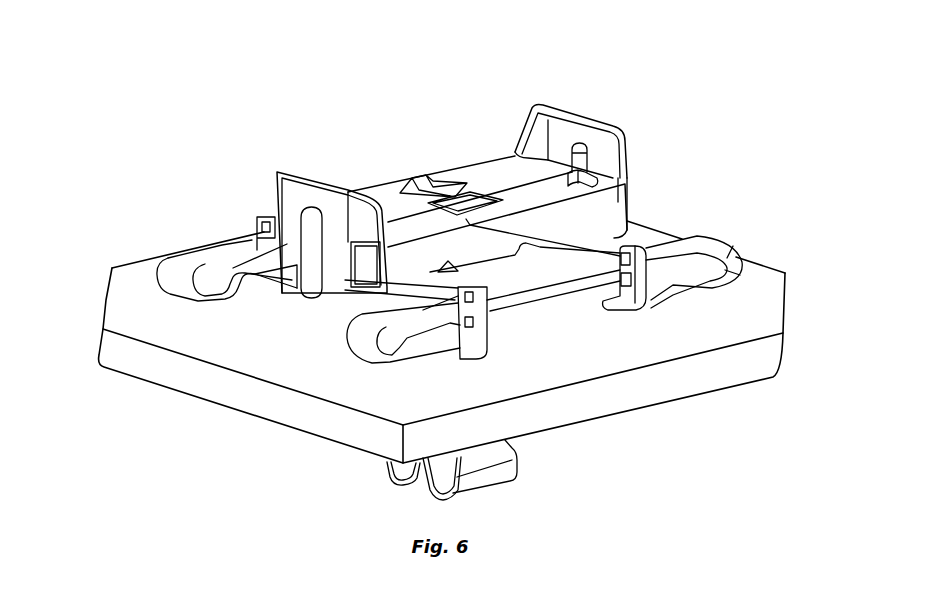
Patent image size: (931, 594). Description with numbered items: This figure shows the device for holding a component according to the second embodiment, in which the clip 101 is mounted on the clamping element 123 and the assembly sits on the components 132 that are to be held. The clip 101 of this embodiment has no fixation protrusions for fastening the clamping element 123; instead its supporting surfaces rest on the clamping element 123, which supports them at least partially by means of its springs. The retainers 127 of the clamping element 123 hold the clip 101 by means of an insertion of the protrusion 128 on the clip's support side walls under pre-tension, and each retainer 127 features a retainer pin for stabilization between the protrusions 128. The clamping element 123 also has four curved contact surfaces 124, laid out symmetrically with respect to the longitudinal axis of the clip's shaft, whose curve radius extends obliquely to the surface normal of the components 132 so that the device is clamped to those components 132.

The clip 101 is at (377, 168).
The clamping element 123 is at (160, 245).
The contact surfaces 124 is at (243, 268).
The retainers 127 is at (296, 196).
The protrusion 128 is at (600, 167).
The components 132 is at (623, 387).